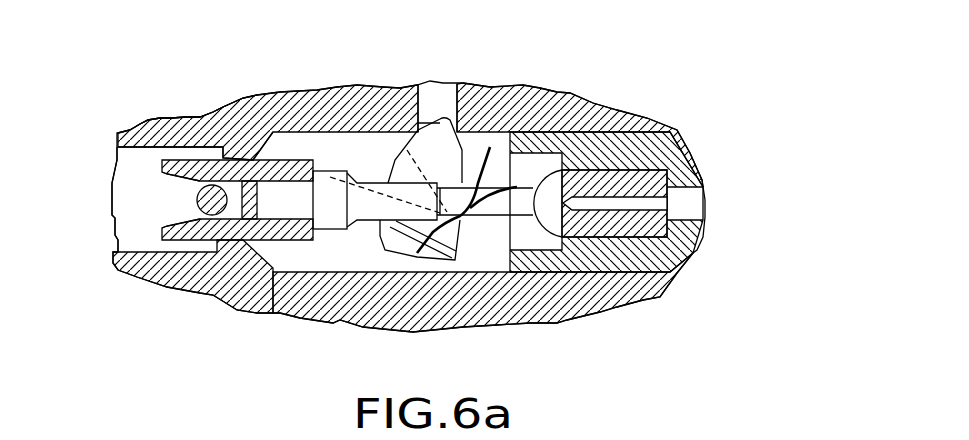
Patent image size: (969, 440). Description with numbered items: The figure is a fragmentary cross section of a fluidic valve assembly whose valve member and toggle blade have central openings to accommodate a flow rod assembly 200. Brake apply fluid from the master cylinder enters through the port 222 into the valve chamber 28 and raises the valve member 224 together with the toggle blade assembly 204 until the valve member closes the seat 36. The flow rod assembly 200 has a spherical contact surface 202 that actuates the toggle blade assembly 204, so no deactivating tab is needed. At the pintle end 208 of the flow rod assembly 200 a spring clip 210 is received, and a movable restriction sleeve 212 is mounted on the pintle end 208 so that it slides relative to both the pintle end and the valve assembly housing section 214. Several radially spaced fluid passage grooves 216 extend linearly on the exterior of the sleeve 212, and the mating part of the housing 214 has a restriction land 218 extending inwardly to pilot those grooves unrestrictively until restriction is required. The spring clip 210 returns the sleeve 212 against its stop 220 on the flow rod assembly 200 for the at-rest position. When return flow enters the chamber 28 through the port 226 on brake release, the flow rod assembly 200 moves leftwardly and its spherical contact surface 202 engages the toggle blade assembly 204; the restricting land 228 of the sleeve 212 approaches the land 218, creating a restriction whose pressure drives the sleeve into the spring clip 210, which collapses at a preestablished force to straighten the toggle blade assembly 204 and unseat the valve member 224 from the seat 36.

The valve chamber 28 is at (367, 140).
The seat 36 is at (445, 117).
The flow rod assembly 200 is at (620, 170).
The spherical contact surface 202 is at (557, 98).
The toggle blade assembly 204 is at (490, 213).
The pintle end 208 is at (198, 206).
The spring clip 210 is at (116, 185).
The movable restriction sleeve 212 is at (180, 240).
The valve assembly housing section 214 is at (228, 118).
The fluid passage grooves 216 is at (240, 245).
The restriction land 218 is at (252, 160).
The stop 220 is at (343, 230).
The port 222 is at (146, 193).
The valve member 224 is at (470, 133).
The port 226 is at (705, 255).
The restricting land 228 is at (287, 272).